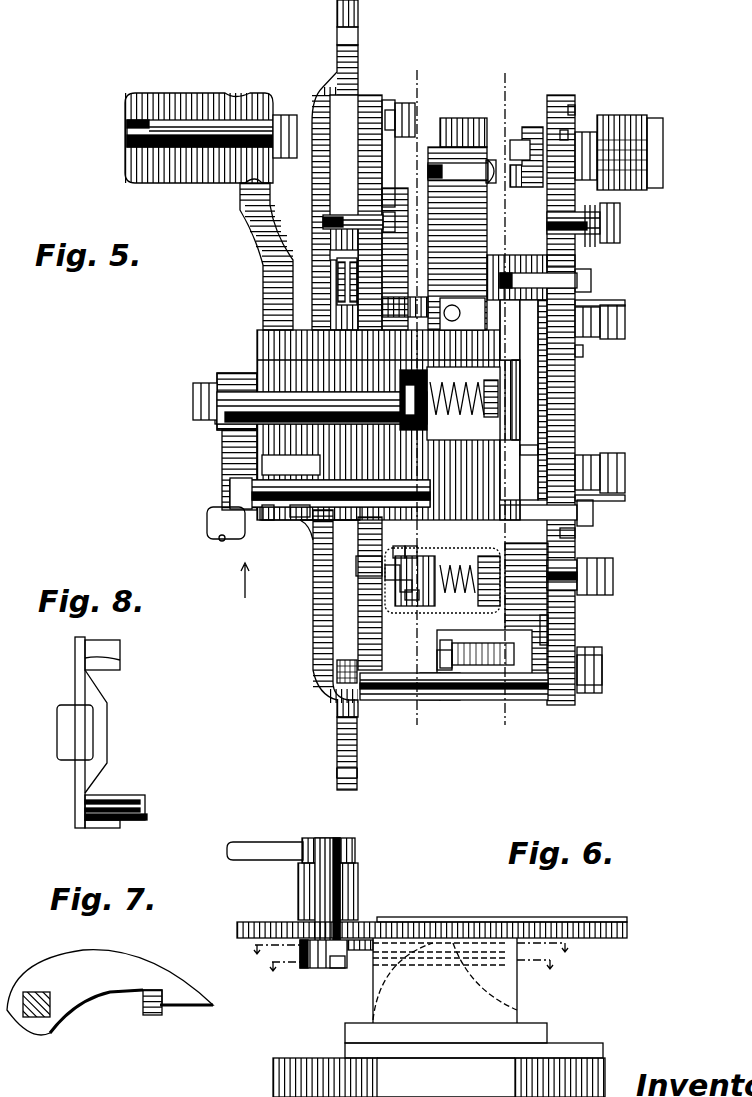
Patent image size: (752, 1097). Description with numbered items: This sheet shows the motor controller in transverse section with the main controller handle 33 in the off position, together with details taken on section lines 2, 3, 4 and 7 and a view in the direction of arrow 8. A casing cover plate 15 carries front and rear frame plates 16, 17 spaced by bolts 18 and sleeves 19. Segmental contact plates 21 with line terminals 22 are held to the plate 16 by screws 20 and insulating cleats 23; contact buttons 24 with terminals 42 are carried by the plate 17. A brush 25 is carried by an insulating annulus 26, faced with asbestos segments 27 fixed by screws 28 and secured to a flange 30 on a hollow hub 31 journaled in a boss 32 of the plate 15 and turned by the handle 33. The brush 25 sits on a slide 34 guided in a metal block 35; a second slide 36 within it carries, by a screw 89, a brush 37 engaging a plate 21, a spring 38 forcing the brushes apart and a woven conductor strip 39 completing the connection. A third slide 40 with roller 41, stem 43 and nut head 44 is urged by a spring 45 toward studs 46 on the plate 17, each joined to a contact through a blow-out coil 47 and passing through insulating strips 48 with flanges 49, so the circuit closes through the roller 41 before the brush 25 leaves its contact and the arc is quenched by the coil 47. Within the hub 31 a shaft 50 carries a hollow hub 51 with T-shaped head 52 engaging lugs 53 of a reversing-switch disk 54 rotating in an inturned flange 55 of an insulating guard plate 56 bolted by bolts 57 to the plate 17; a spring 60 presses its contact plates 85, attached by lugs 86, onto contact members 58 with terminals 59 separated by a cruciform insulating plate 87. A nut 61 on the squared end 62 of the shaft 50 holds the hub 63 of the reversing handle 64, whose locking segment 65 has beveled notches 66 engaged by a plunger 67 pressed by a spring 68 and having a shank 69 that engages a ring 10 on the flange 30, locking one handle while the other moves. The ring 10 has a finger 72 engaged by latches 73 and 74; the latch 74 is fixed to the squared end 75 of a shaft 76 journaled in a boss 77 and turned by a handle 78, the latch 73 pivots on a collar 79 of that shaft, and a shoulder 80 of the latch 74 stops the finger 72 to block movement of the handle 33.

In FIG. 6, the section line 2- 2 is at (406, 952).
In FIG. 5, the section line 3- 3 is at (425, 73).
In FIG. 5, the section line 4- 4 is at (514, 76).
In FIG. 6, the section line 7 is at (408, 968).
In FIG. 5, the arrow 8 is at (244, 592).
In FIG. 5, the base member 10 is at (395, 300).
In FIG. 6, the base member 10 is at (520, 1033).
In FIG. 5, the cover plate 15 is at (330, 82).
In FIG. 6, the cover plate 15 is at (257, 928).
In FIG. 5, the front plate 16 is at (370, 110).
In FIG. 6, the front plate 16 is at (585, 1065).
In FIG. 5, the rear plate 17 is at (560, 110).
In FIG. 5, the bolts 18 is at (590, 668).
In FIG. 5, the spacing sleeves 19 is at (474, 668).
In FIG. 5, the machine screws 20 is at (345, 215).
In FIG. 5, the segmental contact plates 21 is at (382, 140).
In FIG. 5, the line terminal 22 is at (404, 105).
In FIG. 5, the cleats 23 is at (395, 198).
In FIG. 5, the contact members 24 is at (583, 193).
In FIG. 5, the brush 25 is at (550, 603).
In FIG. 5, the annulus 26 is at (462, 132).
In FIG. 5, the segments 27 is at (490, 158).
In FIG. 5, the machine screws 28 is at (493, 160).
In FIG. 5, the flange 30 is at (436, 548).
In FIG. 5, the hollow hub 31 is at (240, 450).
In FIG. 5, the boss 32 is at (300, 340).
In FIG. 5, the main controller handle 33 is at (282, 248).
In FIG. 5, the slide 34 is at (593, 512).
In FIG. 5, the block 35 is at (428, 702).
In FIG. 5, the second slide 36 is at (388, 700).
In FIG. 5, the brush 37 is at (385, 572).
In FIG. 5, the spring 38 is at (408, 600).
In FIG. 5, the conductor strip 39 is at (400, 585).
In FIG. 5, the third slide 40 is at (470, 700).
In FIG. 5, the roller 41 is at (495, 667).
In FIG. 5, the terminals 42 is at (614, 224).
In FIG. 5, the stem 43 is at (447, 700).
In FIG. 5, the head 44 is at (430, 690).
In FIG. 5, the spring 45 is at (472, 636).
In FIG. 5, the studs 46 is at (527, 145).
In FIG. 5, the blow-out coil 47 is at (620, 145).
In FIG. 5, the insulating strips 48 is at (565, 132).
In FIG. 5, the flanges 49 is at (574, 110).
In FIG. 5, the shaft 50 is at (235, 375).
In FIG. 5, the hollow hub 51 is at (300, 556).
In FIG. 5, the T-shaped head 52 is at (583, 352).
In FIG. 5, the lugs 53 is at (627, 312).
In FIG. 5, the disk 54 is at (540, 377).
In FIG. 5, the annular flange 55 is at (525, 450).
In FIG. 5, the insulating guard plate 56 is at (560, 263).
In FIG. 5, the bolts 57 is at (590, 281).
In FIG. 5, the contact members 58 is at (525, 357).
In FIG. 5, the terminals 59 is at (607, 330).
In FIG. 5, the spring 60 is at (500, 393).
In FIG. 5, the nut 61 is at (200, 400).
In FIG. 5, the squared outer end 62 is at (232, 412).
In FIG. 5, the hub 63 is at (225, 385).
In FIG. 5, the reversing handle 64 is at (228, 515).
In FIG. 8, the reversing handle 64 is at (68, 722).
In FIG. 5, the locking segment 65 is at (235, 490).
In FIG. 8, the locking segment 65 is at (82, 812).
In FIG. 5, the notches 66 is at (222, 541).
In FIG. 8, the notches 66 is at (95, 660).
In FIG. 5, the plunger 67 is at (268, 521).
In FIG. 8, the plunger 67 is at (128, 805).
In FIG. 5, the spring 68 is at (300, 518).
In FIG. 5, the shank 69 is at (345, 521).
In FIG. 5, the finger 72 is at (352, 300).
In FIG. 6, the finger 72 is at (503, 980).
In FIG. 7, the finger 72 is at (153, 1003).
In FIG. 5, the latch 73 is at (330, 255).
In FIG. 6, the latch 73 is at (362, 948).
In FIG. 5, the latch 74 is at (338, 282).
In FIG. 6, the latch 74 is at (365, 966).
In FIG. 7, the latch 74 is at (125, 968).
In FIG. 6, the squared inner end 75 is at (335, 965).
In FIG. 7, the squared inner end 75 is at (40, 1008).
In FIG. 6, the shaft 76 is at (330, 905).
In FIG. 6, the boss 77 is at (310, 888).
In FIG. 6, the operating handle 78 is at (250, 849).
In FIG. 6, the collar 79 is at (305, 955).
In FIG. 7, the shoulder 80 is at (165, 1003).
In FIG. 5, the segmental contact plates 85 is at (577, 304).
In FIG. 5, the lugs 86 is at (538, 342).
In FIG. 5, the cruciform insulating plate 87 is at (522, 407).
In FIG. 5, the screw 89 is at (363, 597).